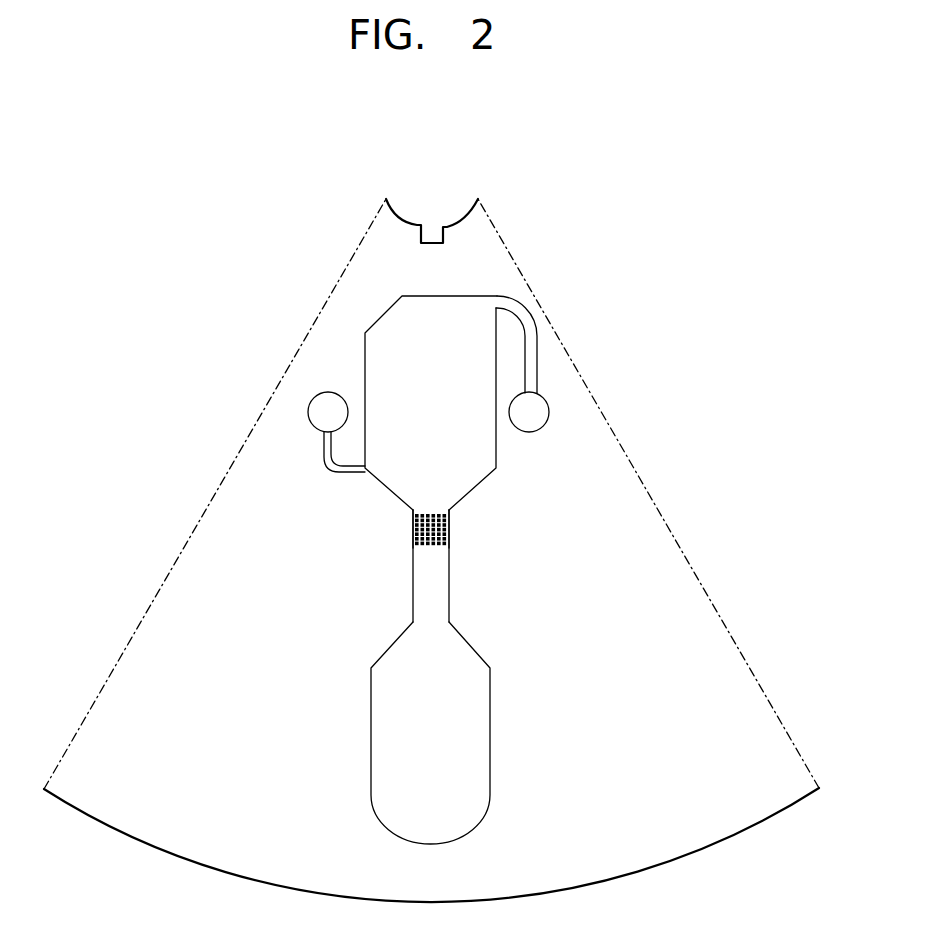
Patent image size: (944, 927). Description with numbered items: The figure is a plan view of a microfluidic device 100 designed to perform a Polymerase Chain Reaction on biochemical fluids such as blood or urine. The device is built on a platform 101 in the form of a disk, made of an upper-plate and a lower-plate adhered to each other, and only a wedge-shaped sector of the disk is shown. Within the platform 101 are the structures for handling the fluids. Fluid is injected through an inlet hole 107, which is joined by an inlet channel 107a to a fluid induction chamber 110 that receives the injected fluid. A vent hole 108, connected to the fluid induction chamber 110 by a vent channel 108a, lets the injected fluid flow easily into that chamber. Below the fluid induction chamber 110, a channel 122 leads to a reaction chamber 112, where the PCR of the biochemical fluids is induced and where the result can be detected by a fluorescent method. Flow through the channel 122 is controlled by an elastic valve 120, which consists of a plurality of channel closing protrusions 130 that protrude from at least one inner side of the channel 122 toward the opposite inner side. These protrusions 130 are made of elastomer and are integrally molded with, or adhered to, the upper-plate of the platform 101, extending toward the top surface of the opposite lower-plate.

The microfluidic device 100 is at (232, 225).
The platform 101 is at (647, 545).
The fluid induction chamber 110 is at (387, 327).
The inlet channel 107a is at (532, 327).
The inlet hole 107 is at (545, 410).
The vent hole 108 is at (317, 410).
The vent channel 108a is at (325, 456).
The elastic valve 120 is at (470, 524).
The channel closing protrusions 130 is at (414, 522).
The channel 122 is at (443, 603).
The reaction chamber 112 is at (380, 743).